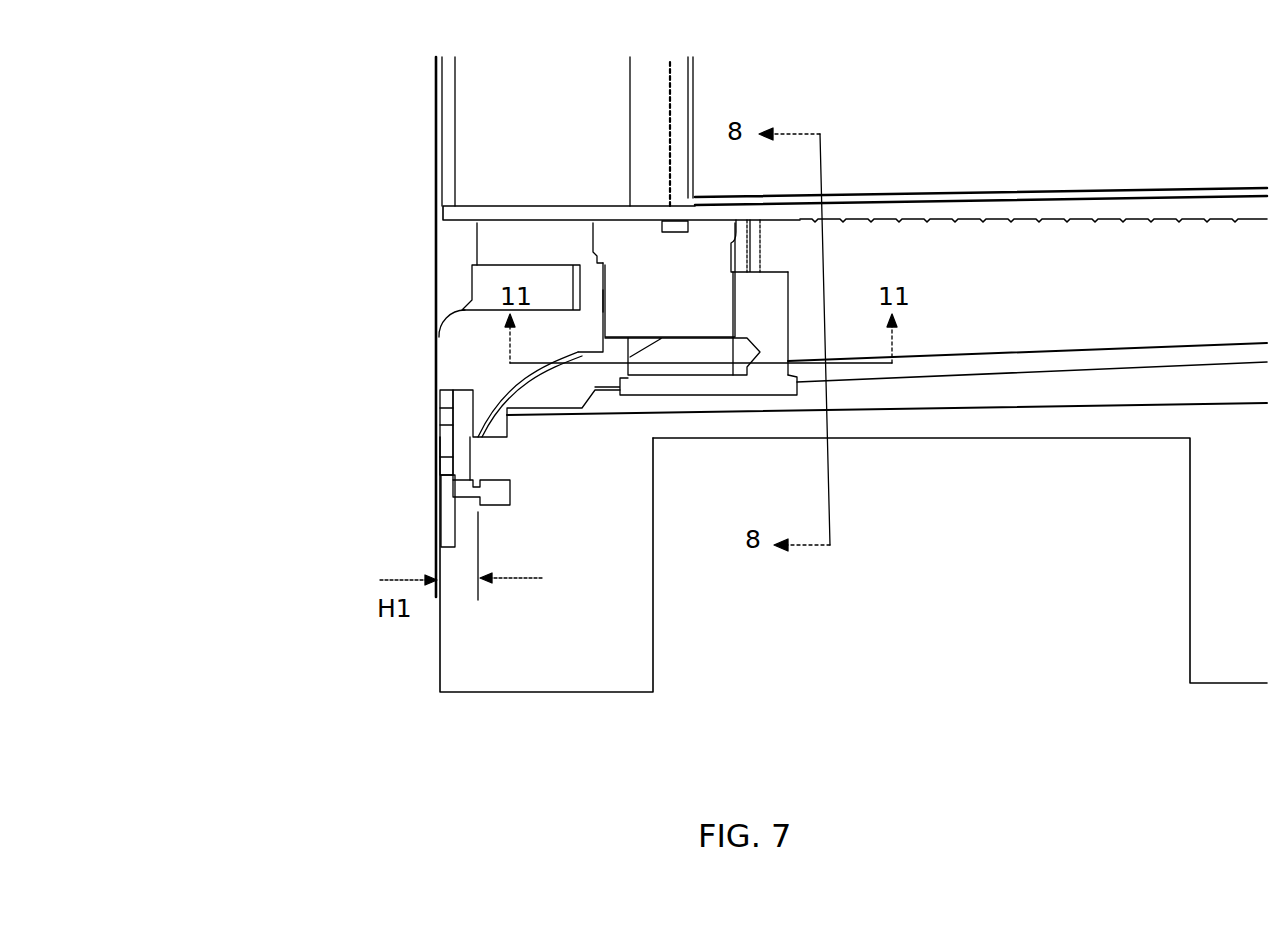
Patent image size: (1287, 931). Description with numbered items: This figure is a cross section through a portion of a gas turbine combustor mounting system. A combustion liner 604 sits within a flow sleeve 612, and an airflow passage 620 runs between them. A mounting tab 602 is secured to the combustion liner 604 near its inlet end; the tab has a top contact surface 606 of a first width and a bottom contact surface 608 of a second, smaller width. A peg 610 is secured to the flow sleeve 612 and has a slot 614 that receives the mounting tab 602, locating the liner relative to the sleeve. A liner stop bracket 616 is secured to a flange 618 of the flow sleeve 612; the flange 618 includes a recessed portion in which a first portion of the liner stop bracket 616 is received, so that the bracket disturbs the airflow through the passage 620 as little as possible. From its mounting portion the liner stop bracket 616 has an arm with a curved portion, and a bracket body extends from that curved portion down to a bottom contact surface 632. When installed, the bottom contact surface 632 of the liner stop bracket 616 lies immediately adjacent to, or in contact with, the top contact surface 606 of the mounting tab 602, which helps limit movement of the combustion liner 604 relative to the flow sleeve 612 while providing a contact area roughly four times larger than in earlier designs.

The mounting tab 602 is at (702, 300).
The combustion liner 604 is at (1059, 205).
The top contact surface 606 is at (603, 263).
The bottom contact surface 608 is at (733, 253).
The peg 610 is at (773, 302).
The flow sleeve 612 is at (990, 365).
The slot 614 is at (702, 350).
The liner stop bracket 616 is at (460, 345).
The flange 618 is at (448, 255).
The passage 620 is at (1155, 288).
The bottom contact surface 632 is at (607, 301).